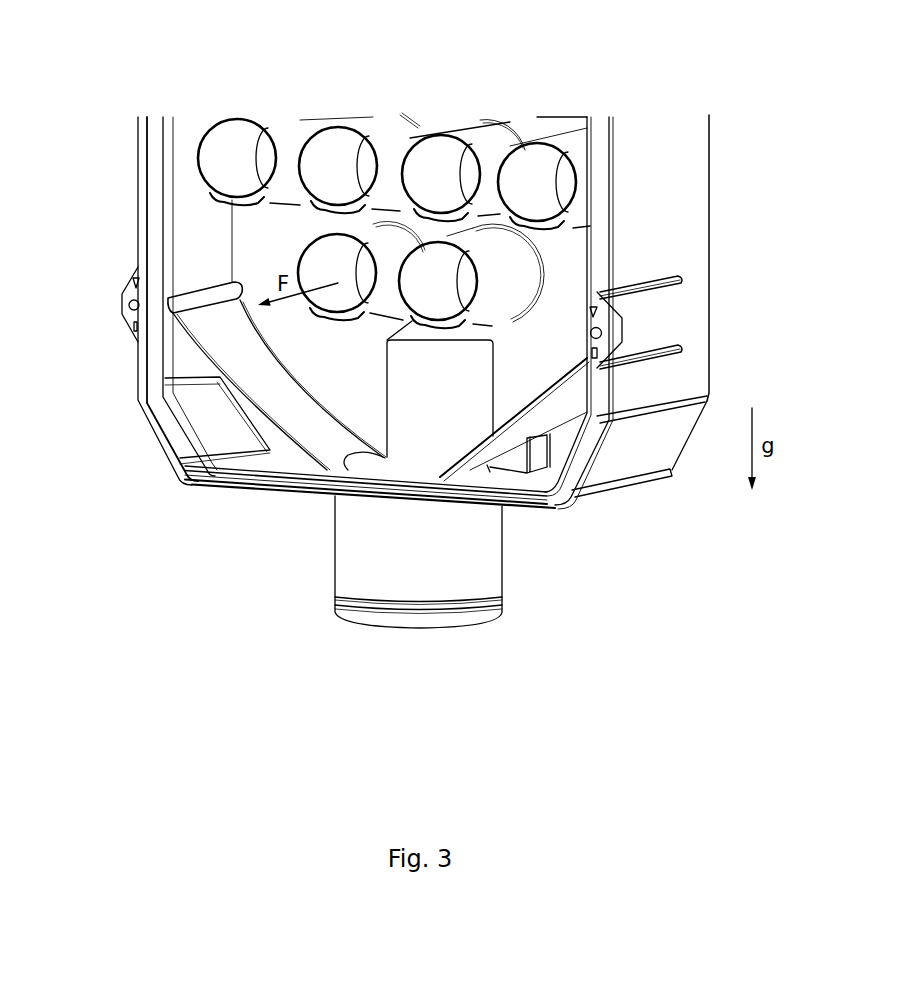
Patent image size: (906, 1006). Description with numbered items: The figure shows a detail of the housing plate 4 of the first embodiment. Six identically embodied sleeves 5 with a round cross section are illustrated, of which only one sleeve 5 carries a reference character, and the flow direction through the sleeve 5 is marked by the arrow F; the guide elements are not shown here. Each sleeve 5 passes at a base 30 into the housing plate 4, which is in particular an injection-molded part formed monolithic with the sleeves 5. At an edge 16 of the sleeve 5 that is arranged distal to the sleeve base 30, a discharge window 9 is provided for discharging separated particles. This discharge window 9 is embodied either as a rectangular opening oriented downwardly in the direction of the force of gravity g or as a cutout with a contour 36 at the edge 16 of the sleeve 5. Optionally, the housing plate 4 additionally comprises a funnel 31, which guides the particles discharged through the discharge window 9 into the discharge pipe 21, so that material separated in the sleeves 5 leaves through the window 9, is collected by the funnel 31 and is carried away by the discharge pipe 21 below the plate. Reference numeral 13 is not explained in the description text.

The housing plate 4 is at (720, 172).
The sleeve 5 is at (465, 133).
The discharge window 9 is at (431, 205).
The pipe opening 13 is at (415, 178).
The edge 16 is at (415, 178).
The discharge pipe 21 is at (488, 558).
The base 30 is at (500, 117).
The funnel 31 is at (223, 348).
The contour 36 is at (457, 227).